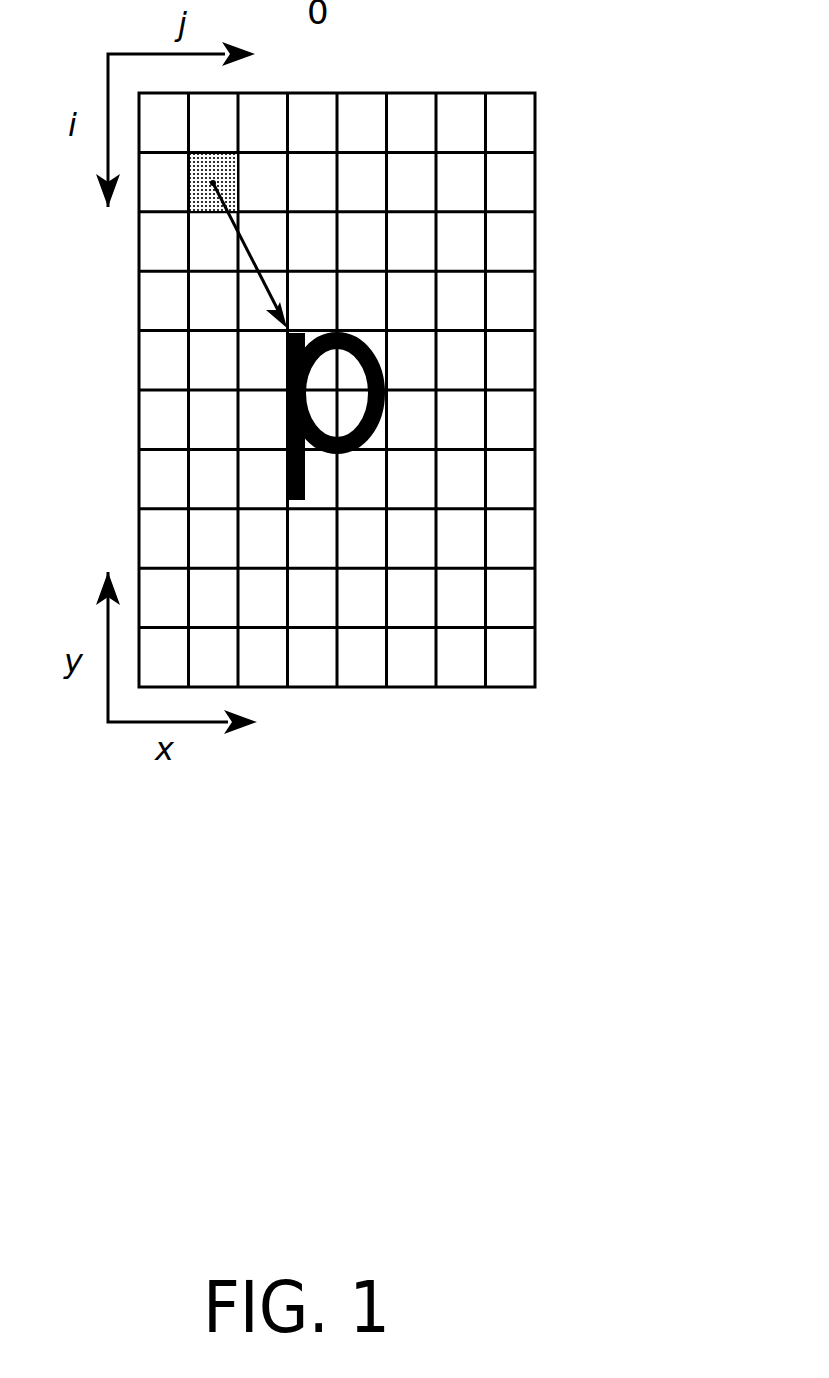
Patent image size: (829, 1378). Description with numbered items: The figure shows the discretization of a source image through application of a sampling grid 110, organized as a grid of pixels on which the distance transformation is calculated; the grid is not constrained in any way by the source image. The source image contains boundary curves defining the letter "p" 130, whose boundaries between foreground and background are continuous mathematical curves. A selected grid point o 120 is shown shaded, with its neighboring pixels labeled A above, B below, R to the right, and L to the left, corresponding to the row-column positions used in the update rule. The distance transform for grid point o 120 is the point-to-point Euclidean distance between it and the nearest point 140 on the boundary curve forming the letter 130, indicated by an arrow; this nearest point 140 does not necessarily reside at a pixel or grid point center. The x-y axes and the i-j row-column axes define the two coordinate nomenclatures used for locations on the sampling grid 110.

The sampling grid 110 is at (535, 107).
The grid point o 120 is at (236, 158).
The letter p 130 is at (288, 420).
The nearest point 140 is at (293, 326).